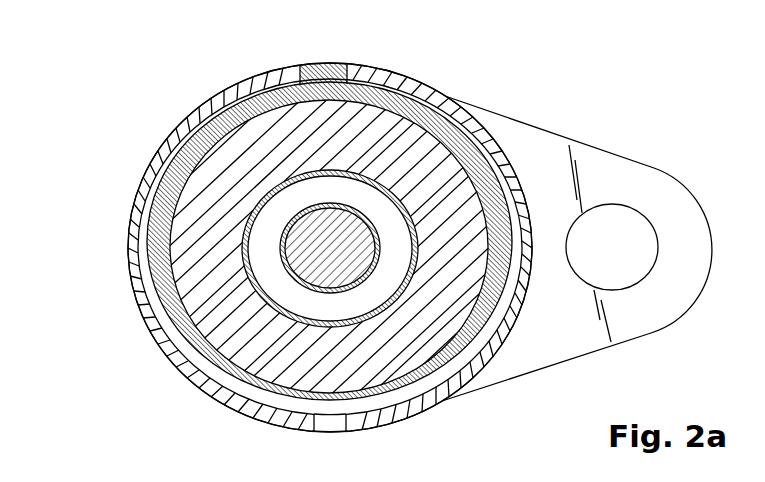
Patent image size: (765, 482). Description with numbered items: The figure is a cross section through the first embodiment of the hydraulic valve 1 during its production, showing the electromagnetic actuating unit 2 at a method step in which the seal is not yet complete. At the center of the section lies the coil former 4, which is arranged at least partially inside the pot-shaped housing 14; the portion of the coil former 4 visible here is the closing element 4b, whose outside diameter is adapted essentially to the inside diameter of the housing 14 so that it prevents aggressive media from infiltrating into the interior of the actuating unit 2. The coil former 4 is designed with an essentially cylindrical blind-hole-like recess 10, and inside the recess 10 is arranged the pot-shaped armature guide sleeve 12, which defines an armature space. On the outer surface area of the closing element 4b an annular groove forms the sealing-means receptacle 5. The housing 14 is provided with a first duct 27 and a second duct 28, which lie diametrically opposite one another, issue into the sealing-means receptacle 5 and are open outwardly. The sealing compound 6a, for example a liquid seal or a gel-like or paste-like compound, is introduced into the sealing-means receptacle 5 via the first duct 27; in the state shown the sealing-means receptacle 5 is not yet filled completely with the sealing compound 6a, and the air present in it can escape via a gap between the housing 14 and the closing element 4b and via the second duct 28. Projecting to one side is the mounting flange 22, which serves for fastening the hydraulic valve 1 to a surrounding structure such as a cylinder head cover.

The hydraulic valve 1 is at (435, 253).
The electromagnetic actuating unit 2 is at (330, 247).
The coil former 4 is at (356, 233).
The closing element 4b is at (270, 133).
The sealing-means receptacle 5 is at (418, 385).
The sealing compound 6a is at (309, 261).
The recess 10 is at (243, 238).
The armature guide sleeve 12 is at (278, 302).
The housing 14 is at (265, 403).
The mounting flange 22 is at (665, 190).
The first duct 27 is at (300, 65).
The second duct 28 is at (325, 426).